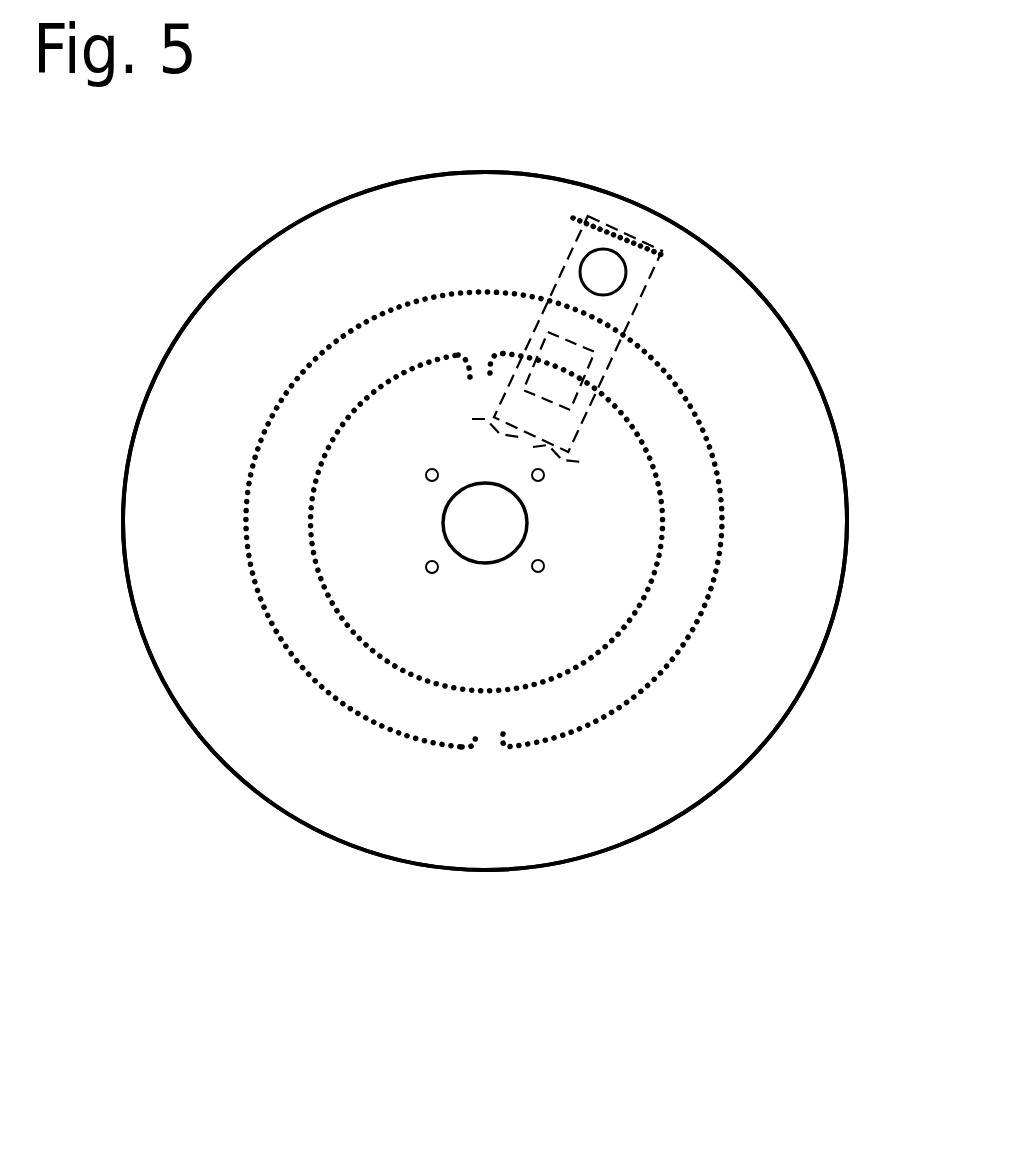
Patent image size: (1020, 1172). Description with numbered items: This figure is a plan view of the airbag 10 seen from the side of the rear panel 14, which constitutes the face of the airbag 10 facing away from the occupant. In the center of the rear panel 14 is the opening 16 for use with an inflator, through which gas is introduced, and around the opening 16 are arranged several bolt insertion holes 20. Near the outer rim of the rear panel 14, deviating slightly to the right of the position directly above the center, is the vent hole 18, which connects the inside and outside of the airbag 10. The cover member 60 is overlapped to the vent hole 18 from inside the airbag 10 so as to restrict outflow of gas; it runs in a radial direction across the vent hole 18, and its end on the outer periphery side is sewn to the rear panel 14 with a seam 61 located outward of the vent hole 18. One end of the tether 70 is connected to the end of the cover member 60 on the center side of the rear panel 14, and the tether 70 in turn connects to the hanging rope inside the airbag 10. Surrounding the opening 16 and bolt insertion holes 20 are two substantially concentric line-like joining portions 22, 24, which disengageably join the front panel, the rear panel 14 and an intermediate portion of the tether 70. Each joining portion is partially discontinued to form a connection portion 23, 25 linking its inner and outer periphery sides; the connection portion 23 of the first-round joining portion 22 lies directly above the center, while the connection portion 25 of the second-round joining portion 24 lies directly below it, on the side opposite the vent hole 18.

The airbag 10 is at (777, 820).
The rear panel 14 is at (170, 453).
The opening 16 is at (443, 525).
The vent hole 18 is at (587, 262).
The bolt insertion holes 20 is at (427, 466).
The line-like joining portion 22 is at (343, 627).
The connection portion 23 is at (465, 343).
The line-like joining portion 24 is at (703, 604).
The connection portion 25 is at (488, 770).
The cover member 60 is at (647, 290).
The seam 61 is at (632, 243).
The tether 70 is at (523, 390).